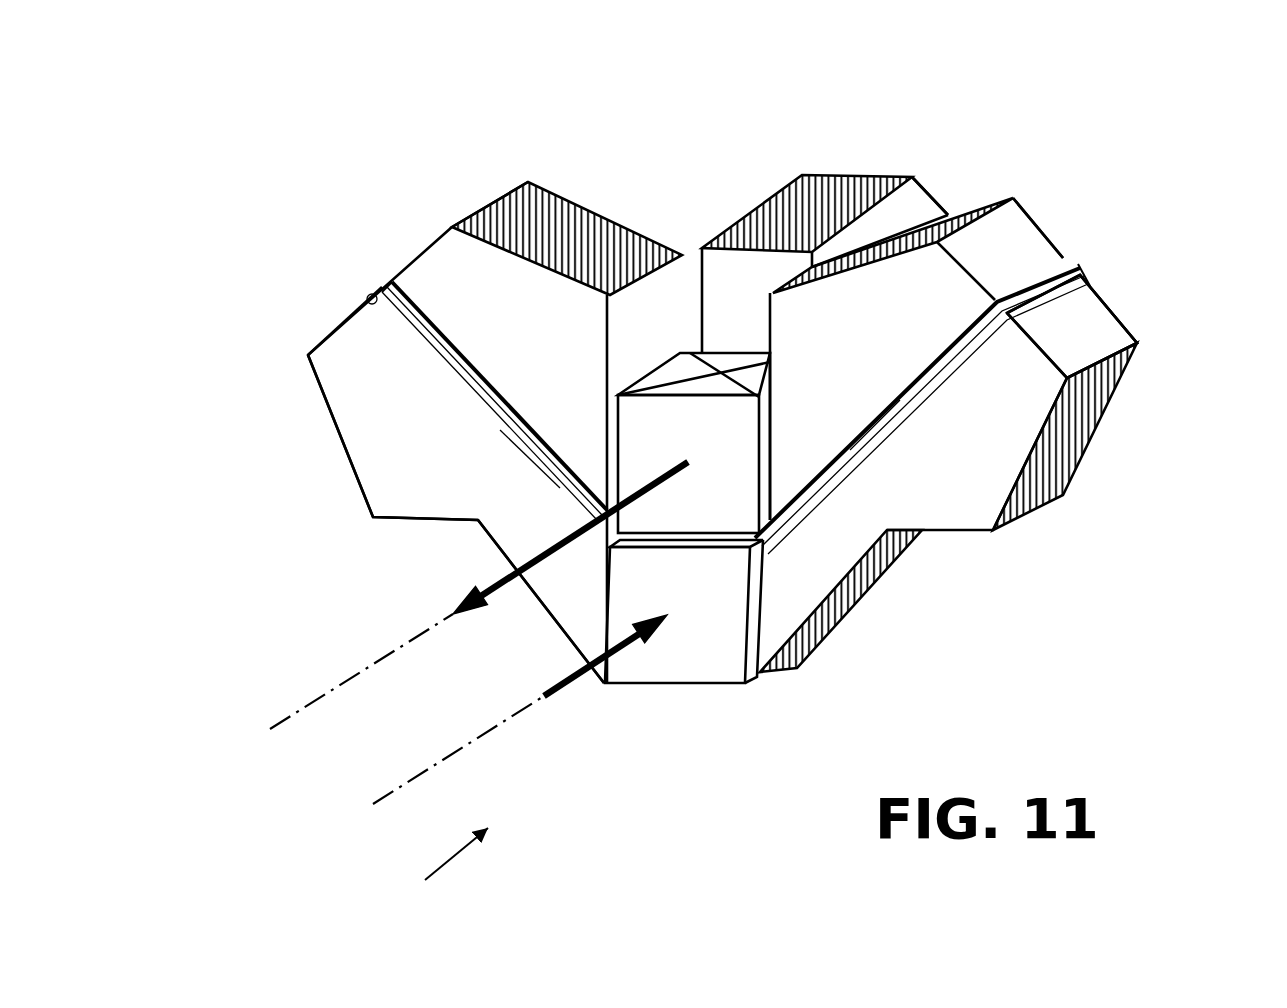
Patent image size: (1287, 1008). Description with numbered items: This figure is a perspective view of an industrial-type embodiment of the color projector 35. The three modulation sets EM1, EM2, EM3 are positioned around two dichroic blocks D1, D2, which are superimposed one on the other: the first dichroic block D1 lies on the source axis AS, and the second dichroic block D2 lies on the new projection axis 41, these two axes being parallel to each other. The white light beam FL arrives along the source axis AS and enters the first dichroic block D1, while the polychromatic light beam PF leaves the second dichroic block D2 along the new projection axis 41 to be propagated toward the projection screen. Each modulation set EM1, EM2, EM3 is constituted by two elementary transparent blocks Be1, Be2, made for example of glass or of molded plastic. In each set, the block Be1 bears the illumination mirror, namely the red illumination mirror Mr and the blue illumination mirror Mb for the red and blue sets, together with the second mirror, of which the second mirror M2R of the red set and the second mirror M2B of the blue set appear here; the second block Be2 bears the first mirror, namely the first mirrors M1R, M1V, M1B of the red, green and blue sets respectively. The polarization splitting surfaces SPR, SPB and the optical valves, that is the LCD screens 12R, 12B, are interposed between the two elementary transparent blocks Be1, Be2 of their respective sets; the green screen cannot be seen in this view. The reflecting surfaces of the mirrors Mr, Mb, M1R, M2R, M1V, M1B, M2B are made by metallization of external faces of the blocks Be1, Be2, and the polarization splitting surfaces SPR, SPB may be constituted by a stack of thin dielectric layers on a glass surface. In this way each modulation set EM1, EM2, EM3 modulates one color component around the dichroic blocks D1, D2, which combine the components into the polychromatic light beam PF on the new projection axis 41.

The first modulation set EM1 is at (263, 388).
The second modulation set EM2 is at (1023, 605).
The third modulation set EM3 is at (888, 123).
The first mirror of red channel M1R is at (553, 202).
The second mirror of red channel M2R is at (335, 427).
The first mirror of green channel M1V is at (837, 175).
The first mirror of blue channel M1B is at (967, 208).
The second mirror of blue channel M2B is at (1093, 433).
The red illumination mirror Mr is at (492, 554).
The blue illumination mirror Mb is at (875, 582).
The first elementary transparent block Be1 is at (327, 332).
The second elementary transparent block Be2 is at (487, 207).
The red LCD screen 12R is at (376, 298).
The blue LCD screen 12B is at (1073, 293).
The red polarization splitting surface SPR is at (542, 482).
The blue polarization splitting surface SPB is at (873, 437).
The first dichroic block D1 is at (685, 668).
The second dichroic block D2 is at (683, 367).
The polychromatic light beam PF is at (518, 588).
The white light beam FL is at (568, 695).
The source axis AS is at (457, 750).
The new projection axis 41 is at (345, 683).
The color projector 35 is at (440, 860).